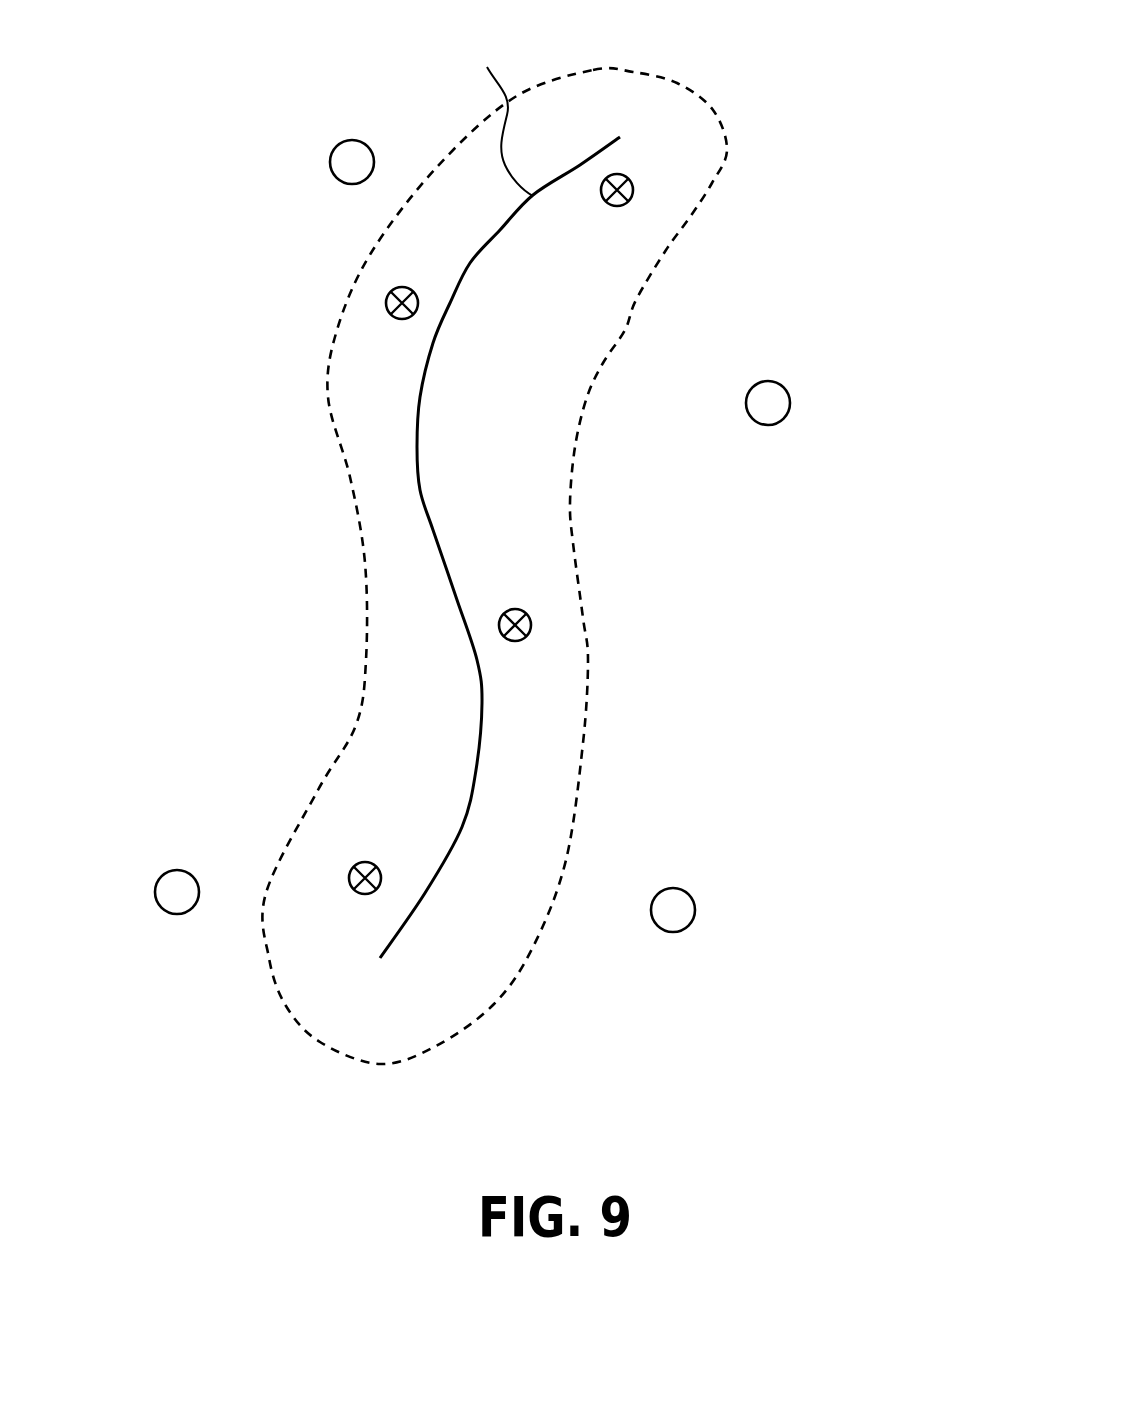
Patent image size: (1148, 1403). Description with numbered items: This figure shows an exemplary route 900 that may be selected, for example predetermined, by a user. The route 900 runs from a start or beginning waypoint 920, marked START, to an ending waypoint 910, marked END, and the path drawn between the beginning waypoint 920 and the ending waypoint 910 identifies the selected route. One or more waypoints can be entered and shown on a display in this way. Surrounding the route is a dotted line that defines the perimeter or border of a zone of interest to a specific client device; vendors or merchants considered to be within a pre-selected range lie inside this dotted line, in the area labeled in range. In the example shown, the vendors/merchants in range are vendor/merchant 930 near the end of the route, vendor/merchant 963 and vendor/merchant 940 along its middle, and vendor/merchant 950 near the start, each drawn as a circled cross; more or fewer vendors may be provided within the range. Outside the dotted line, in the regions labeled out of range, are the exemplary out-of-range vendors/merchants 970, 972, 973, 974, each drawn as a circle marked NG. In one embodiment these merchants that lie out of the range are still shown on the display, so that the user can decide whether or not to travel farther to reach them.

The route 900 is at (812, 75).
The ending waypoint 910 is at (653, 100).
The beginning waypoint 920 is at (422, 968).
The vendor/merchant 930 is at (634, 192).
The vendor/merchant 940 is at (515, 610).
The vendor/merchant 950 is at (372, 863).
The vendor/merchant 963 is at (410, 290).
The vendor/merchant 970 is at (687, 890).
The vendor/merchant 972 is at (345, 141).
The vendor/merchant 973 is at (752, 420).
The vendor/merchant 974 is at (177, 870).